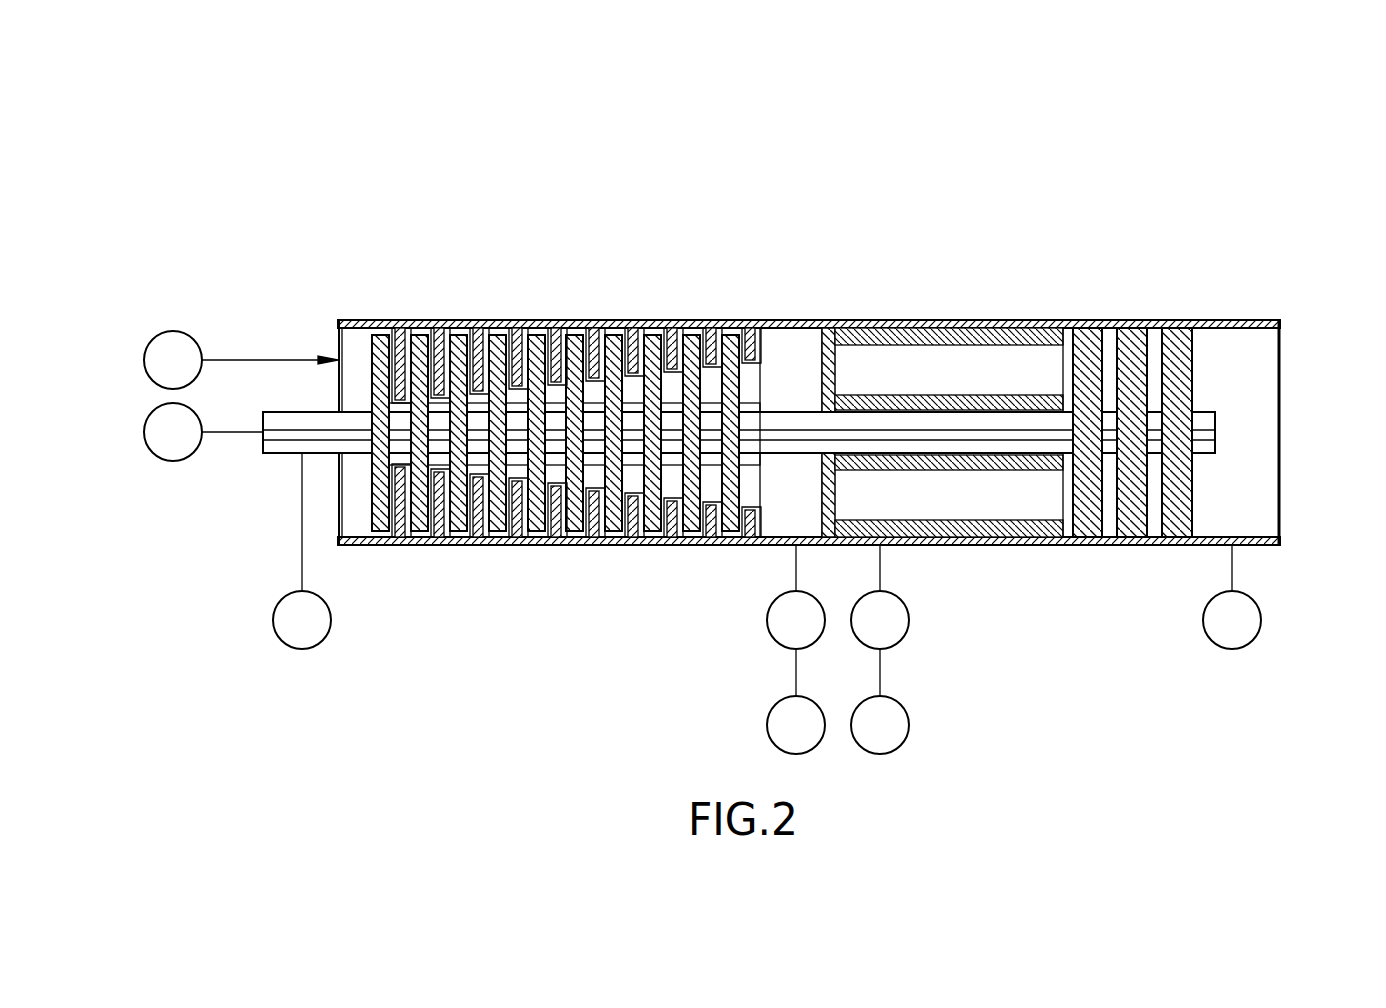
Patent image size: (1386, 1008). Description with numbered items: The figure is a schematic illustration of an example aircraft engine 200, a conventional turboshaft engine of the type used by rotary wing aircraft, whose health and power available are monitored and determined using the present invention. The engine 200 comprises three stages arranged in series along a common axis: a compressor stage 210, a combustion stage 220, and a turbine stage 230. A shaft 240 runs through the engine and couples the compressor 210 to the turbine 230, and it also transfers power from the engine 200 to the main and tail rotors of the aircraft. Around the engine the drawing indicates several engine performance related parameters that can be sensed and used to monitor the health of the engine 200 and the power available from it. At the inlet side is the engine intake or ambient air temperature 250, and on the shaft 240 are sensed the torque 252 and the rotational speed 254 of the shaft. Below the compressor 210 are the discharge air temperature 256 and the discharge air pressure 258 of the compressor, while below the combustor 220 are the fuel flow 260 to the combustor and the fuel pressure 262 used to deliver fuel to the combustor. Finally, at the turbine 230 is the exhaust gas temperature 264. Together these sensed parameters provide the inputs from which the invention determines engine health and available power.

The aircraft engine 200 is at (1262, 197).
The compressor stage 210 is at (778, 305).
The combustion stage 220 is at (1066, 305).
The turbine stage 230 is at (1274, 305).
The shaft 240 is at (283, 453).
The engine intake or ambient air temperature 250 is at (190, 336).
The torque 252 is at (155, 457).
The rotational speed 254 is at (326, 638).
The discharge air temperature 256 is at (771, 635).
The discharge air pressure 258 is at (768, 730).
The fuel flow 260 is at (905, 634).
The fuel pressure 262 is at (908, 731).
The exhaust gas temperature 264 is at (1252, 641).